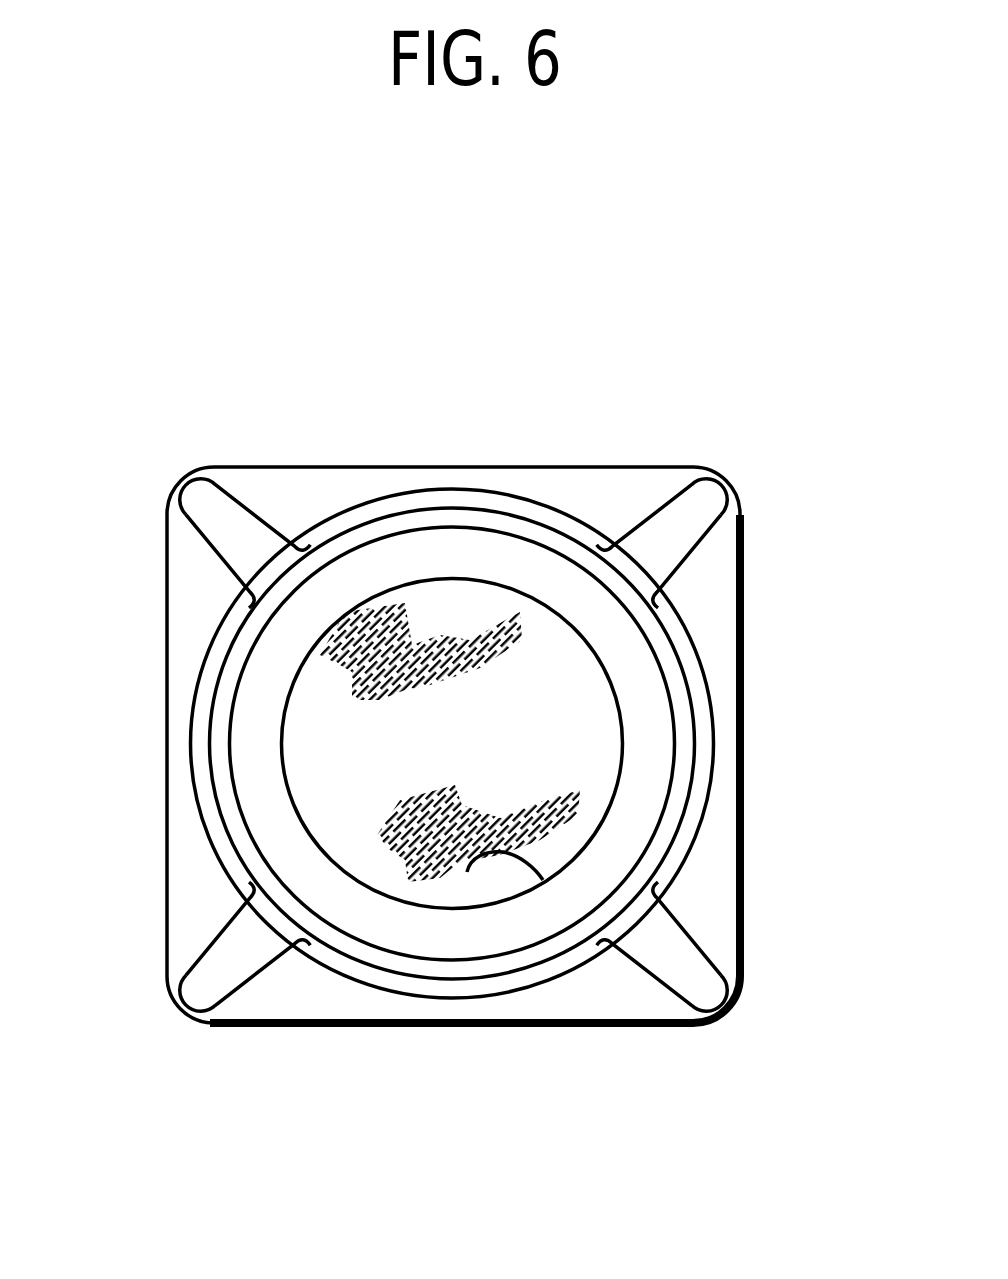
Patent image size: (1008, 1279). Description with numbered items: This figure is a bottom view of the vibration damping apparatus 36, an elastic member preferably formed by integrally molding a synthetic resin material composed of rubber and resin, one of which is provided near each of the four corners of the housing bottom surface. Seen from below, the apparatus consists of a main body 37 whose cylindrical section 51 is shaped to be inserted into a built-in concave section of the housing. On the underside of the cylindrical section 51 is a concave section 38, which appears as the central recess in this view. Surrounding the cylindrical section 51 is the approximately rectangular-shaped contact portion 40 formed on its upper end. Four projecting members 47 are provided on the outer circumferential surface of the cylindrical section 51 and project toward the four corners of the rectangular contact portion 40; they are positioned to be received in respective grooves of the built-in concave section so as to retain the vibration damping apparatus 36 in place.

The vibration damping apparatus 36 is at (428, 453).
The main body 37 is at (260, 800).
The concave section 38 is at (468, 872).
The contact portion 40 is at (742, 806).
The projecting members 47 is at (207, 503).
The cylindrical section 51 is at (673, 693).